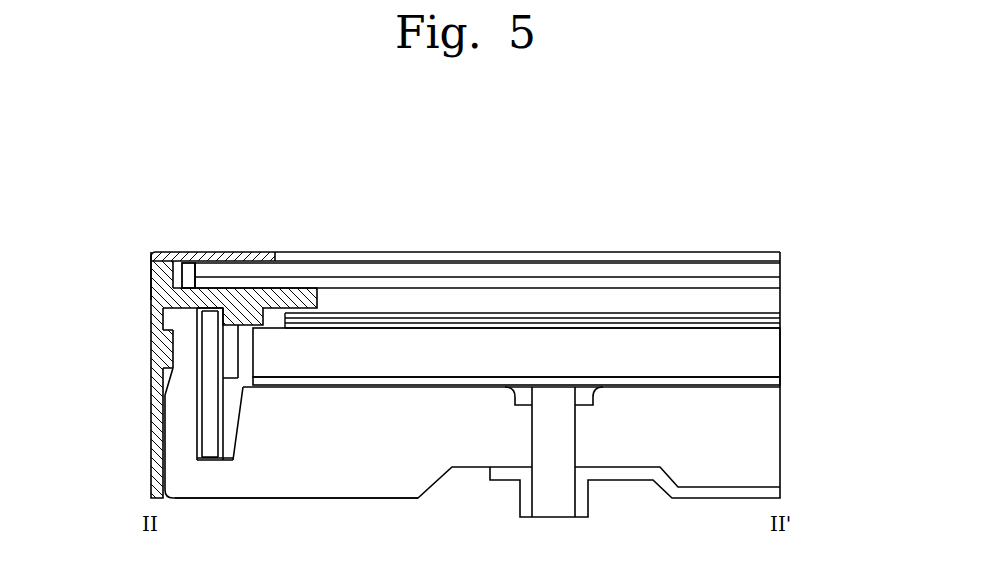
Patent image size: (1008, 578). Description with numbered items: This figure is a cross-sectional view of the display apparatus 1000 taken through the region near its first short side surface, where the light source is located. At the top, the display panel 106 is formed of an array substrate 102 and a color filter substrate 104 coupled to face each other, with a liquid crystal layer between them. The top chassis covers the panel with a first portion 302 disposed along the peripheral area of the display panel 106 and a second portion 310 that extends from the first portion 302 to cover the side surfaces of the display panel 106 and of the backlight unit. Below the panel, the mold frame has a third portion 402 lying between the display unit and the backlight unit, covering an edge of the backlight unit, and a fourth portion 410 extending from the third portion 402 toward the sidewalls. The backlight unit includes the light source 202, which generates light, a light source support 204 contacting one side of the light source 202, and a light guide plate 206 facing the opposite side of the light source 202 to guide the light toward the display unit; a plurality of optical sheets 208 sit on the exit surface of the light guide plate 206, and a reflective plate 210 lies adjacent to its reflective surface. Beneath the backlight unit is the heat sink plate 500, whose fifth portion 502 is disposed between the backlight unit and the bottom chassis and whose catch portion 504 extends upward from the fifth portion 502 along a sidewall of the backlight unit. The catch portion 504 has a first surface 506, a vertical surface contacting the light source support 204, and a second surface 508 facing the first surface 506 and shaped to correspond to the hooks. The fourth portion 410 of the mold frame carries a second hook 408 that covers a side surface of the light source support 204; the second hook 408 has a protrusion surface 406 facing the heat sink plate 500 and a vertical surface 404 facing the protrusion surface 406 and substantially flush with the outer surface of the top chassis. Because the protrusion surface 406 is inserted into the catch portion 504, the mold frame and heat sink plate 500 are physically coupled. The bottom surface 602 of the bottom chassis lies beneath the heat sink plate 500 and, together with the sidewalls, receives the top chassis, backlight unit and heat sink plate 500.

The display apparatus 1000 is at (718, 195).
The second portion 310 is at (150, 247).
The first portion 302 is at (228, 252).
The catch portion 504 is at (190, 252).
The third portion 402 is at (248, 310).
The fourth portion 410 is at (150, 281).
The second hook 408 is at (168, 375).
The vertical surface 404 is at (151, 327).
The protrusion surface 406 is at (165, 356).
The second surface 508 is at (158, 380).
The first surface 506 is at (195, 442).
The light source support 204 is at (213, 450).
The light source 202 is at (228, 368).
The heat sink plate 500 is at (472, 411).
The fifth portion 502 is at (380, 493).
The bottom surface 602 is at (708, 492).
The array substrate 102 is at (772, 270).
The color filter substrate 104 is at (772, 283).
The display panel 106 is at (553, 277).
The optical sheets 208 is at (784, 313).
The light guide plate 206 is at (770, 353).
The reflective plate 210 is at (768, 381).